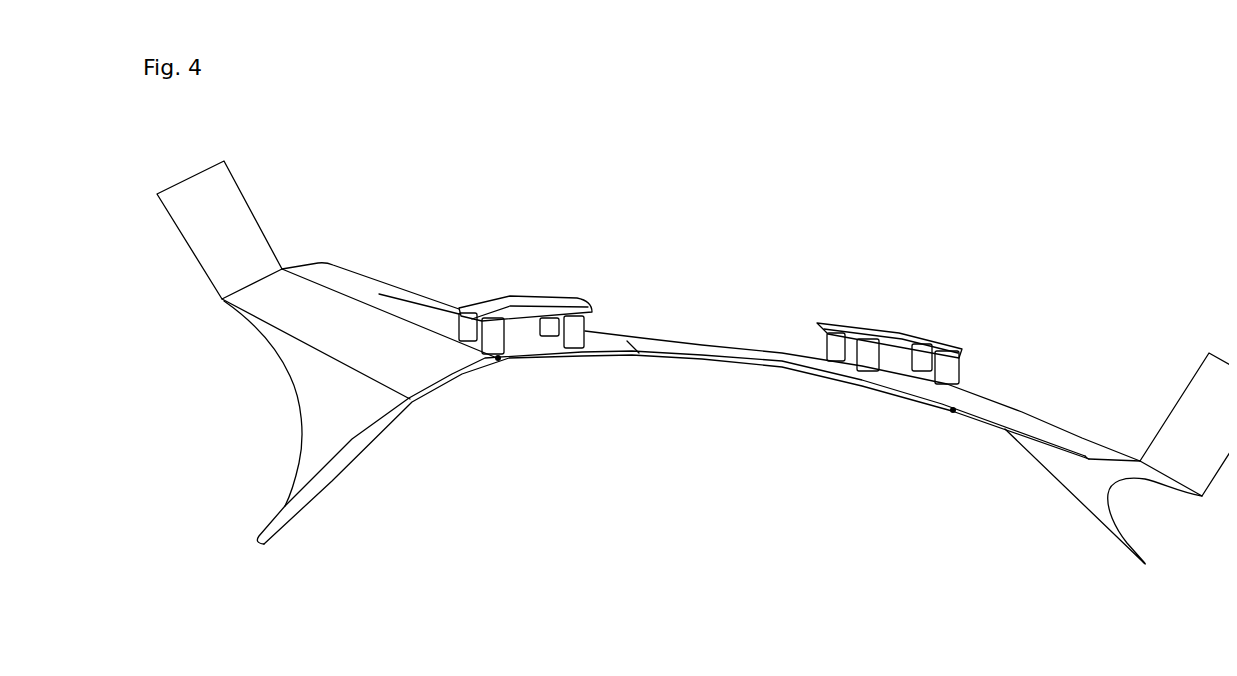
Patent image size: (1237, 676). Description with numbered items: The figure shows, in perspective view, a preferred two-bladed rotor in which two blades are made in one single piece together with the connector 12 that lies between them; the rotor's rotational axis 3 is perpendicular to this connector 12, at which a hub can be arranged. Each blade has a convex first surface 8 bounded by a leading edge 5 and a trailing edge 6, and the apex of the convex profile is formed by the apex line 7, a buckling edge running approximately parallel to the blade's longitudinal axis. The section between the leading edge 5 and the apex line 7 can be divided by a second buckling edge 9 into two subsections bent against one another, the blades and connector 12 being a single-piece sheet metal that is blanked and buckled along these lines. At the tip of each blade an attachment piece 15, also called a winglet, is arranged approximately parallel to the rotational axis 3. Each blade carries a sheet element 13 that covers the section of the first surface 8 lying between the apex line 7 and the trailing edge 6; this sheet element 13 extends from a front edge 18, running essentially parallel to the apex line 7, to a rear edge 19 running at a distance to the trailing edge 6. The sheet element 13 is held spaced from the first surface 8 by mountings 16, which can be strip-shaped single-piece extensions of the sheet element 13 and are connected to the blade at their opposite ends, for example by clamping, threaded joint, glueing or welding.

The rotational axis 3 is at (708, 433).
The leading edge 5 is at (293, 397).
The trailing edge 6 is at (432, 297).
The apex line 7 is at (498, 360).
The first surface 8 is at (952, 408).
The second buckling edge 9 is at (409, 400).
The connector 12 is at (688, 343).
The sheet element 13 is at (508, 293).
The attachment piece 15 is at (693, 328).
The mounting 16 is at (572, 328).
The front edge 18 is at (377, 293).
The rear edge 19 is at (827, 334).